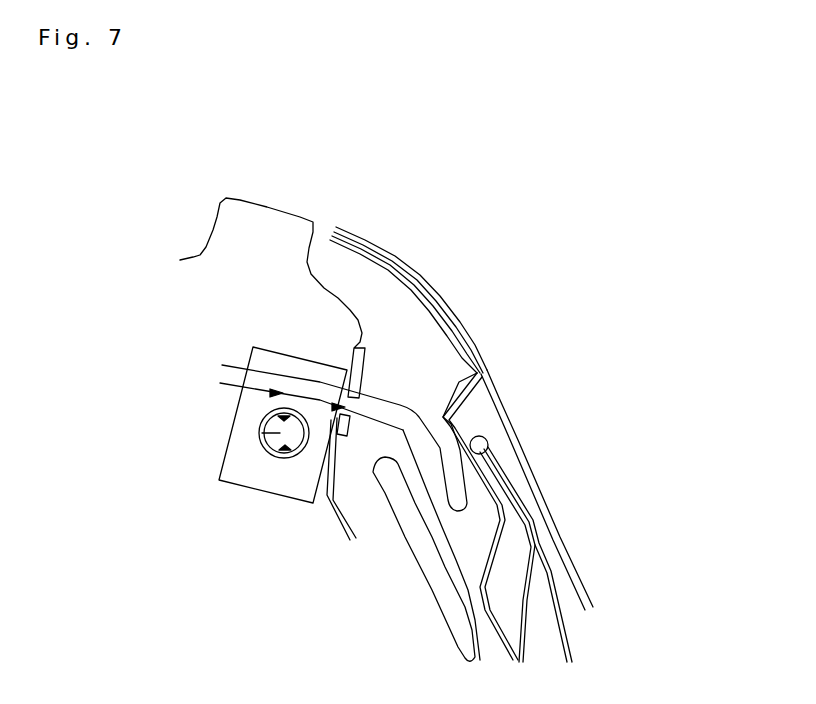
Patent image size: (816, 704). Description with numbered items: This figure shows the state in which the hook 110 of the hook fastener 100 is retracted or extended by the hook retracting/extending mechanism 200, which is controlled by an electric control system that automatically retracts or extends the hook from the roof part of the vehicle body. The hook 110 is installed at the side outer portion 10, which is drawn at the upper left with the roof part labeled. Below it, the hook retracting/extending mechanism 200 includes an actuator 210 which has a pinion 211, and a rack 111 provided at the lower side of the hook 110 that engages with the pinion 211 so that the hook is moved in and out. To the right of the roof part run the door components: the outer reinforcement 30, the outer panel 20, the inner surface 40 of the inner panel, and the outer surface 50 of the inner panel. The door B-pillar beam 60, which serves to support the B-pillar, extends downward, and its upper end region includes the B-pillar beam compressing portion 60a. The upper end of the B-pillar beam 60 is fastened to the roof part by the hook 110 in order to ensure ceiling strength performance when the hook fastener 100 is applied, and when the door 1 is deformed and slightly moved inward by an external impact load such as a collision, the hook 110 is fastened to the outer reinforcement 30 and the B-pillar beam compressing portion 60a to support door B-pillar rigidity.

The door 1 is at (422, 191).
The side outer portion 10 is at (283, 207).
The outer panel 20 is at (489, 376).
The outer reinforcement 30 is at (432, 288).
The inner surface of inner panel 40 is at (437, 537).
The outer surface of inner panel 50 is at (438, 607).
The door B-pillar beam 60 is at (548, 572).
The B-pillar beam compressing portion 60a is at (508, 415).
The hook fastener 100 is at (411, 403).
The hook 110 is at (248, 372).
The rack 111 is at (266, 392).
The hook retracting/extending mechanism 200 is at (136, 298).
The actuator 210 is at (250, 453).
The pinion 211 is at (262, 433).